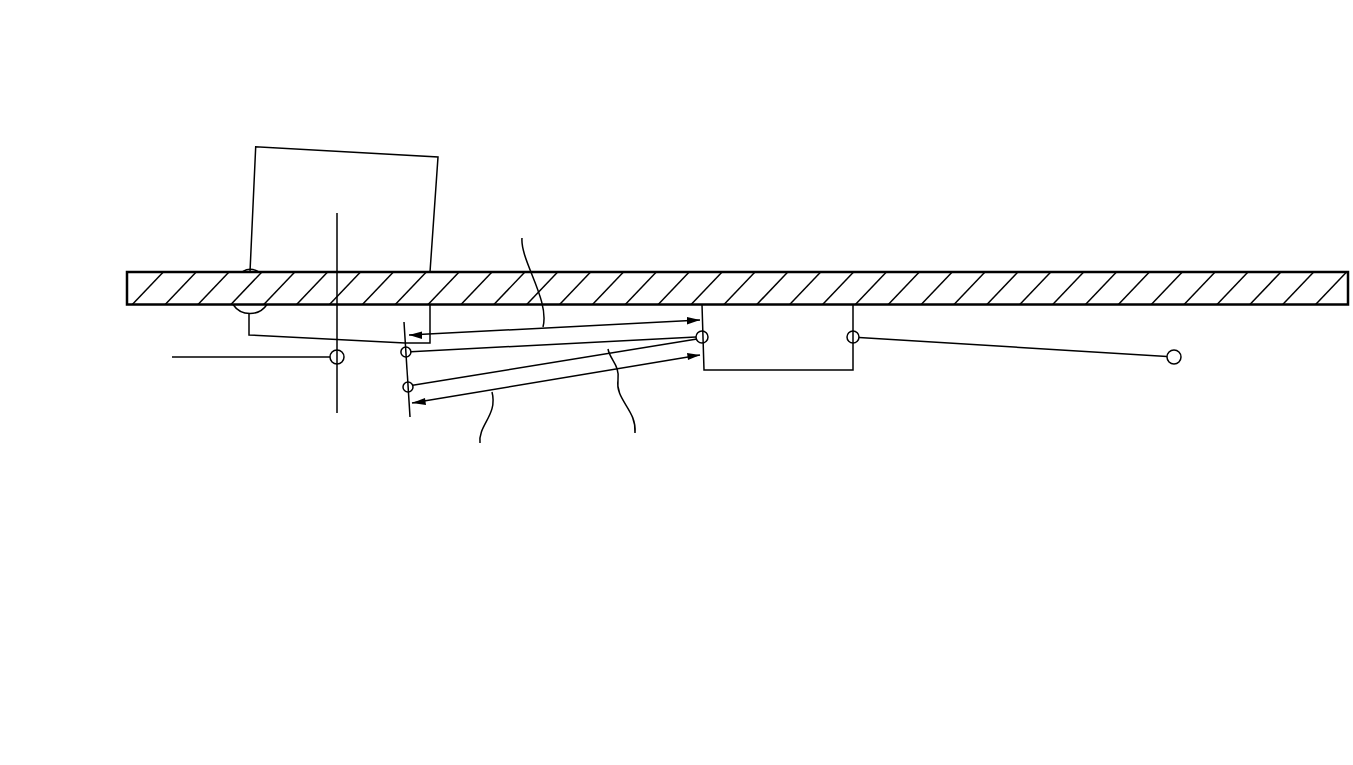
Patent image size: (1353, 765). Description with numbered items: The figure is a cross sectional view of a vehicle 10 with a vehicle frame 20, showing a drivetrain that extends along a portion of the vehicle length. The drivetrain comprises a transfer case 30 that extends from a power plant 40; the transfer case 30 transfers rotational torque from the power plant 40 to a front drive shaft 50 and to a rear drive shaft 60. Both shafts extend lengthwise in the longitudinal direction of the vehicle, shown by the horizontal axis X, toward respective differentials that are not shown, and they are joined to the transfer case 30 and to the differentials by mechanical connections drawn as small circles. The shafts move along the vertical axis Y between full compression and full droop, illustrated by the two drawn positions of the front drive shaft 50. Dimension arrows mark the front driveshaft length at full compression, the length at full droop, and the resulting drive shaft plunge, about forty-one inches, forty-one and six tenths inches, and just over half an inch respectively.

The vehicle 10 is at (236, 71).
The vehicle frame 20 is at (1098, 278).
The transfer case 30 is at (827, 357).
The power plant 40 is at (410, 174).
The front drive shaft 50 is at (567, 344).
The rear drive shaft 60 is at (1025, 348).